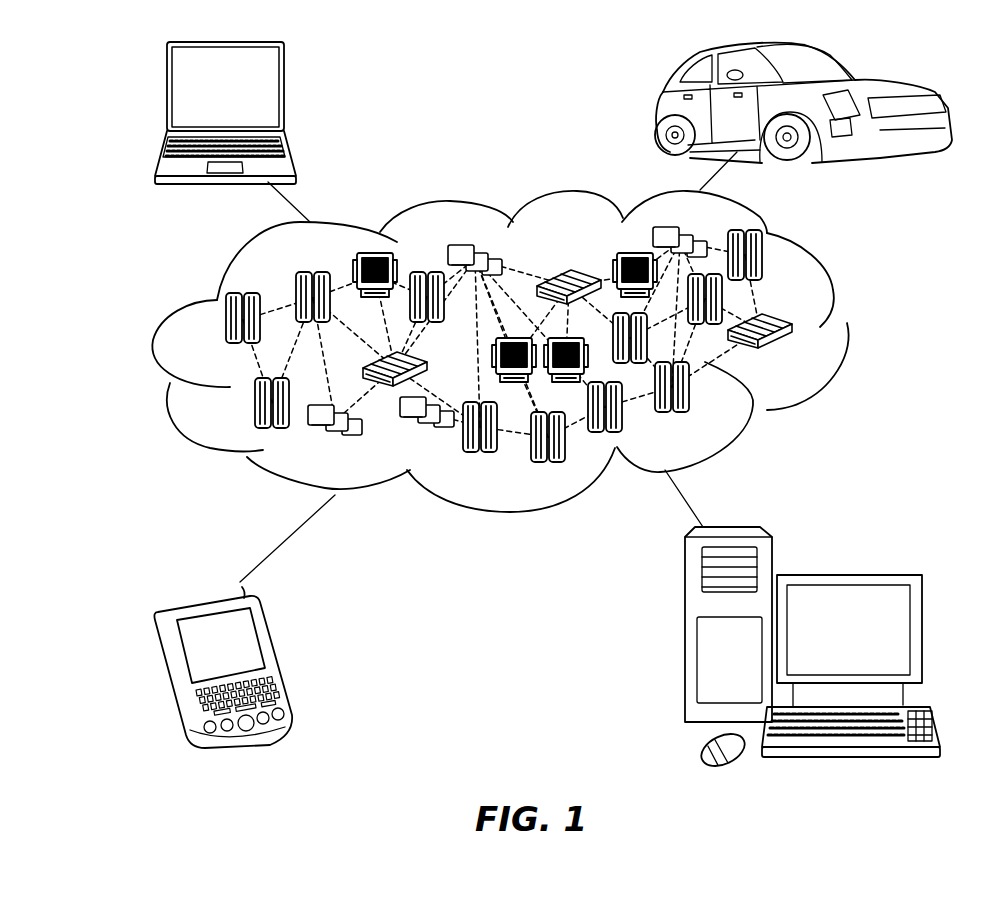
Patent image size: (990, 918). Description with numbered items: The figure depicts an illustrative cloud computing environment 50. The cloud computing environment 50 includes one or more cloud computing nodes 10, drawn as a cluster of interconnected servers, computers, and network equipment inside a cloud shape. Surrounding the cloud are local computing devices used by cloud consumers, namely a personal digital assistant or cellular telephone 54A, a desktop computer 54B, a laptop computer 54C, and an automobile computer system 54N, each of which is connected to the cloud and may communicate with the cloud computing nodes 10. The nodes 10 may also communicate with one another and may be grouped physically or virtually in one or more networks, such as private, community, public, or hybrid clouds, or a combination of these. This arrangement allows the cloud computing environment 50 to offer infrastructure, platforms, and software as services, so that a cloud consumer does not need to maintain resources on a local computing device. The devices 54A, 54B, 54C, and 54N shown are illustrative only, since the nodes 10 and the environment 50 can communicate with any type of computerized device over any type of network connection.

The cloud computing nodes 10 is at (801, 358).
The cloud computing environment 50 is at (847, 323).
The personal digital assistant or cellular telephone 54A is at (275, 657).
The desktop computer 54B is at (847, 575).
The laptop computer 54C is at (285, 94).
The automobile computer system 54N is at (660, 108).